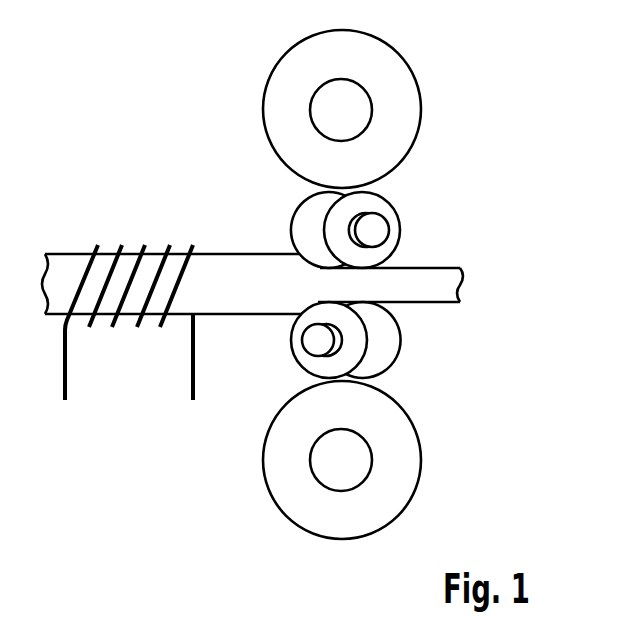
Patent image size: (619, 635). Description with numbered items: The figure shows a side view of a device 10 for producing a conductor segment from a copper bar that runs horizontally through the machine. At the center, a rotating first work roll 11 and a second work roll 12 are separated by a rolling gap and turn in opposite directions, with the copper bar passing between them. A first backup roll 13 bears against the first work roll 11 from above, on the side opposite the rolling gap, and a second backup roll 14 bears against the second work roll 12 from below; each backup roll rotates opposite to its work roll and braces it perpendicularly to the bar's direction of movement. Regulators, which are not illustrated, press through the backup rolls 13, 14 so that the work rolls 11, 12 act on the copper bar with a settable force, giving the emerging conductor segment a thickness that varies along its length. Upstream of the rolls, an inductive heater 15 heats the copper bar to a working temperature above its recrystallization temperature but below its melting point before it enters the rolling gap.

The device 10 is at (88, 71).
The first work roll 11 is at (290, 227).
The second work roll 12 is at (290, 340).
The first backup roll 13 is at (262, 102).
The second backup roll 14 is at (262, 460).
The inductive heater 15 is at (98, 245).